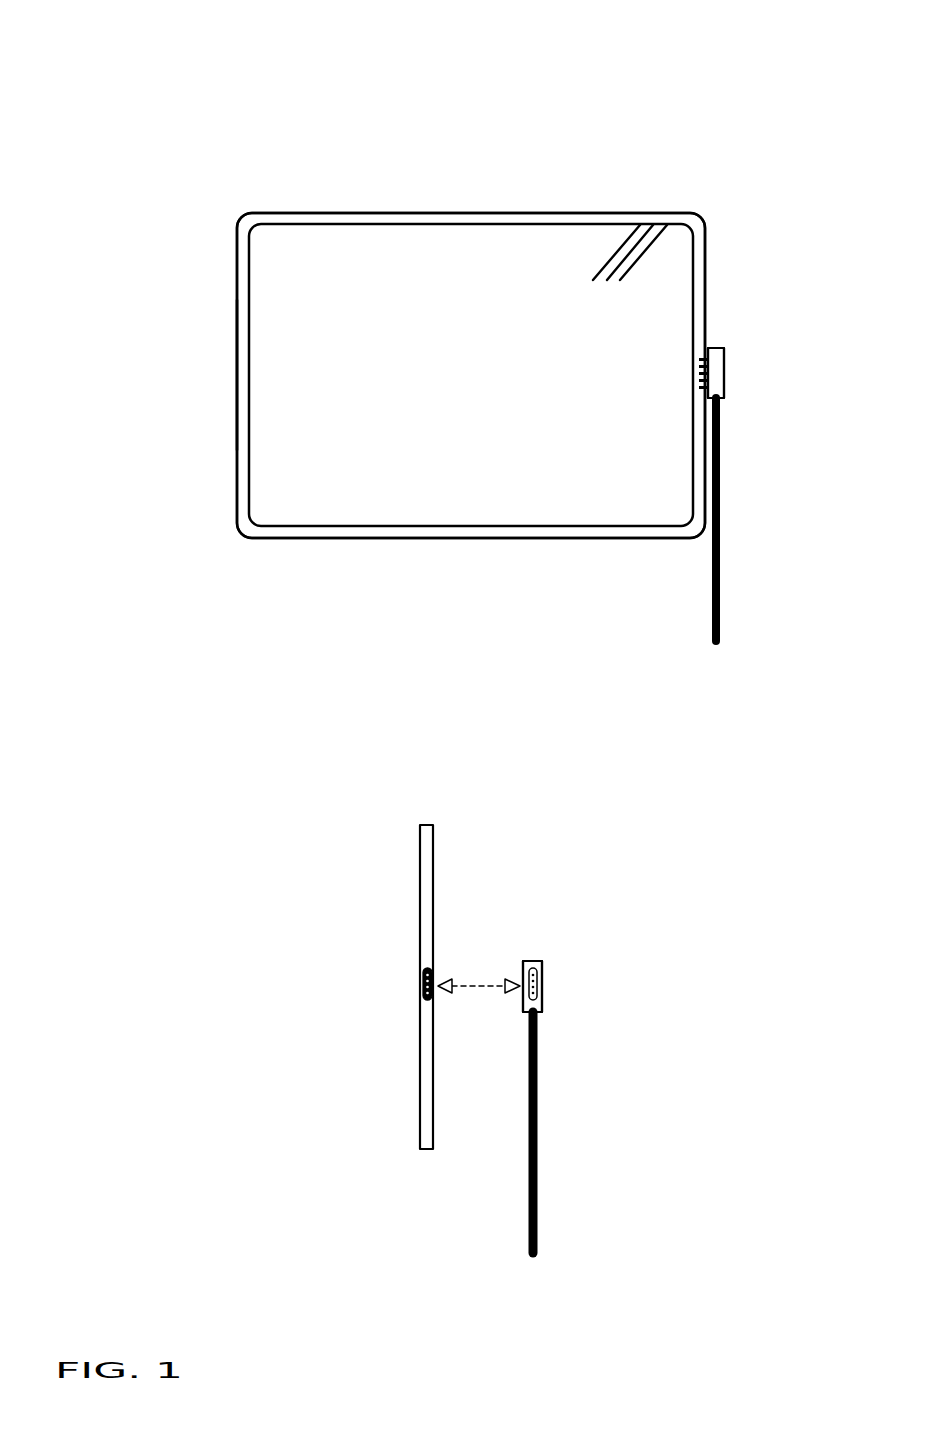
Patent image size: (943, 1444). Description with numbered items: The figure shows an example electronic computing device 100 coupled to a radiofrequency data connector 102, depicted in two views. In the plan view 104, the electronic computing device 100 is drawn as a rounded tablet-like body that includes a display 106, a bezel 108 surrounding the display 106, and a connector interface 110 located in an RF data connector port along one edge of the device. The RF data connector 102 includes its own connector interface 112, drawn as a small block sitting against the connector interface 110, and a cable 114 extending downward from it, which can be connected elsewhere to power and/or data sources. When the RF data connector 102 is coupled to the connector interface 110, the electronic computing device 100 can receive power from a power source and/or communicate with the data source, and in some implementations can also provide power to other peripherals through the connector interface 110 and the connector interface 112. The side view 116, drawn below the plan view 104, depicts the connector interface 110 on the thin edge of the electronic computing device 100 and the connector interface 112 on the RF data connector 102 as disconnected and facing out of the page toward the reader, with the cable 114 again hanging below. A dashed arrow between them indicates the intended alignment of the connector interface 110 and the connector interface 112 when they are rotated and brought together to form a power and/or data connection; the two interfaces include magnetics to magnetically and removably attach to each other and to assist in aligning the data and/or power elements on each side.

The electronic computing device 100 is at (260, 213).
The RF data connector 102 is at (712, 347).
The plan view 104 is at (152, 50).
The display 106 is at (283, 303).
The bezel 108 is at (247, 447).
The connector interface 110 is at (703, 372).
The connector interface 112 is at (712, 380).
The cable 114 is at (720, 473).
The side view 116 is at (152, 705).